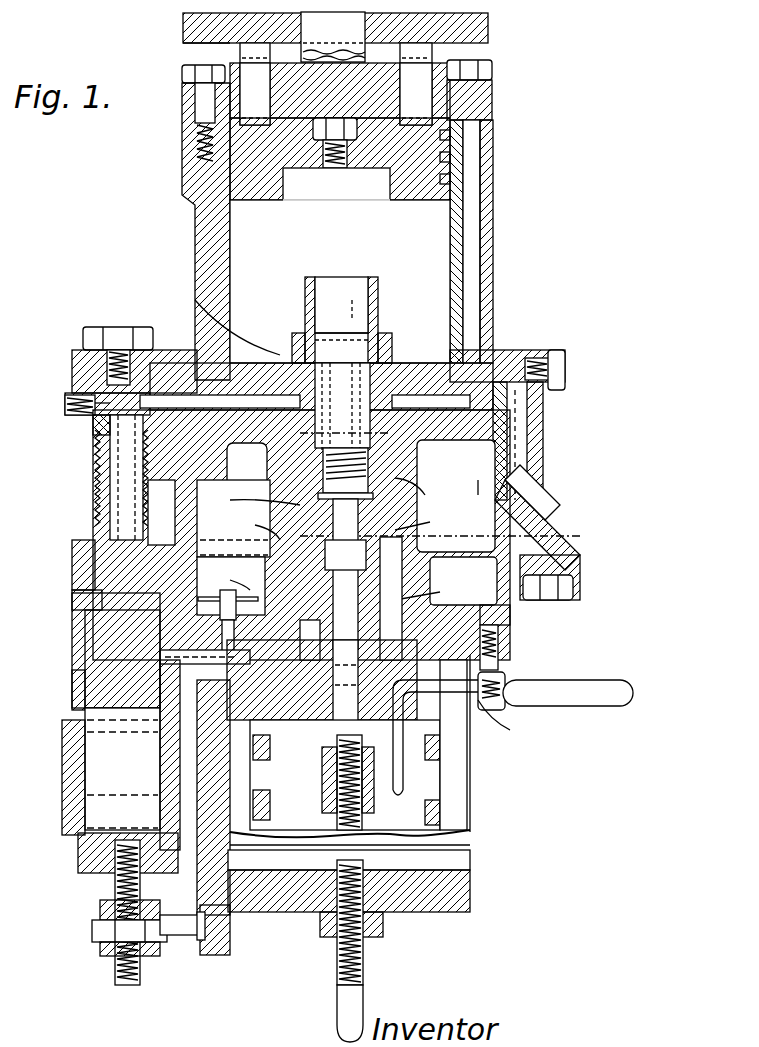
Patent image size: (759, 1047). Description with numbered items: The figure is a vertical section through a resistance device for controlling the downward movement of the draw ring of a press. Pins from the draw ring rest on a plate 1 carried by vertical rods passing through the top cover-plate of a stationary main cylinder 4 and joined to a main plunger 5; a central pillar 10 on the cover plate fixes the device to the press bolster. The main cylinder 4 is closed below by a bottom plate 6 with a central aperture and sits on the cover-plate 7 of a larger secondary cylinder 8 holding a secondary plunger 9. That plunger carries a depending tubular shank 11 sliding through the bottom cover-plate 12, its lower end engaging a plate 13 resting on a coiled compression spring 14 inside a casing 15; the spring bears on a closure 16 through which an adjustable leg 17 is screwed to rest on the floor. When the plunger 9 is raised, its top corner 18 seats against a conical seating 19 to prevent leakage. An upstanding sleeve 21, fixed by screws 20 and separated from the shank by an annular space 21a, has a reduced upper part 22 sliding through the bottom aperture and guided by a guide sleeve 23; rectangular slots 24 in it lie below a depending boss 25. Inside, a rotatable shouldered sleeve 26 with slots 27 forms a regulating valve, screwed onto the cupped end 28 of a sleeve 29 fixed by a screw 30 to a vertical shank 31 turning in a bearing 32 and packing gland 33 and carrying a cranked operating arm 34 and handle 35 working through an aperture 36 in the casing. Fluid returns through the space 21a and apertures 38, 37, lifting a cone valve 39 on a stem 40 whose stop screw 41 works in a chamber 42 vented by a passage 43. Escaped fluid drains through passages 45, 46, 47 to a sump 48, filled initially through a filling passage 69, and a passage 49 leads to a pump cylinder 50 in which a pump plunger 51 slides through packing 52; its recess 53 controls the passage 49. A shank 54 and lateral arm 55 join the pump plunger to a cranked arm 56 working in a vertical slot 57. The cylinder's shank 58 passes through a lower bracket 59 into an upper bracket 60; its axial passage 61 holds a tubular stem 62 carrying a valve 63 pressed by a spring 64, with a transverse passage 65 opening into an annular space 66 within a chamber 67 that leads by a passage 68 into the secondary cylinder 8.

The plate 1 is at (490, 28).
The main cylinder 4 is at (208, 232).
The main plunger 5 is at (280, 205).
The bottom plate 6 is at (480, 362).
The cover-plate 7 is at (155, 345).
The secondary cylinder 8 is at (180, 508).
The secondary plunger 9 is at (265, 501).
The central pillar 10 is at (315, 22).
The tubular shank 11 is at (482, 492).
The bottom cover-plate 12 is at (545, 630).
The plate 13 is at (160, 742).
The coiled compression spring 14 is at (470, 858).
The casing 15 is at (470, 838).
The closure 16 is at (310, 910).
The adjustable leg 17 is at (355, 990).
The top corner 18 is at (225, 385).
The conical seating 19 is at (205, 372).
The screws 20 is at (498, 650).
The upstanding sleeve 21 is at (235, 495).
The annular space 21a is at (288, 466).
The upper part of sleeve 22 is at (378, 290).
The guide sleeve 23 is at (378, 335).
The rectangular slots 24 is at (340, 304).
The depending boss 25 is at (196, 300).
The rotatable shouldered sleeve 26 is at (392, 362).
The slots 27 is at (312, 335).
The cupped end 28 is at (463, 581).
The sleeve 29 is at (432, 593).
The screw 30 is at (232, 590).
The vertical shank 31 is at (330, 758).
The bearing 32 is at (418, 732).
The packing gland 33 is at (345, 775).
The operating arm 34 is at (506, 720).
The handle 35 is at (600, 672).
The aperture 36 is at (460, 785).
The aperture 37 is at (252, 525).
The large aperture 38 is at (425, 523).
The cone valve 39 is at (456, 496).
The stem 40 is at (423, 491).
The screw 41 is at (380, 690).
The chamber 42 is at (505, 685).
The passage 43 is at (244, 575).
The passage 45 is at (455, 130).
The passage 46 is at (470, 170).
The passage 47 is at (543, 418).
The sump 48 is at (500, 585).
The passage 49 is at (160, 660).
The pump cylinder 50 is at (75, 688).
The pump plunger 51 is at (85, 635).
The packing 52 is at (65, 757).
The recess 53 is at (120, 615).
The shank 54 is at (112, 960).
The lateral arm 55 is at (230, 950).
The cranked arm 56 is at (197, 880).
The vertical slot 57 is at (230, 782).
The shank 58 is at (93, 500).
The lower bracket 59 is at (85, 542).
The upper bracket 60 is at (93, 440).
The axial passage 61 is at (80, 585).
The tubular stem 62 is at (95, 490).
The valve 63 is at (65, 408).
The spring 64 is at (83, 352).
The transverse passage 65 is at (98, 455).
The annular space 66 is at (95, 405).
The chamber 67 is at (70, 392).
The passage 68 is at (72, 370).
The filling passage 69 is at (565, 512).